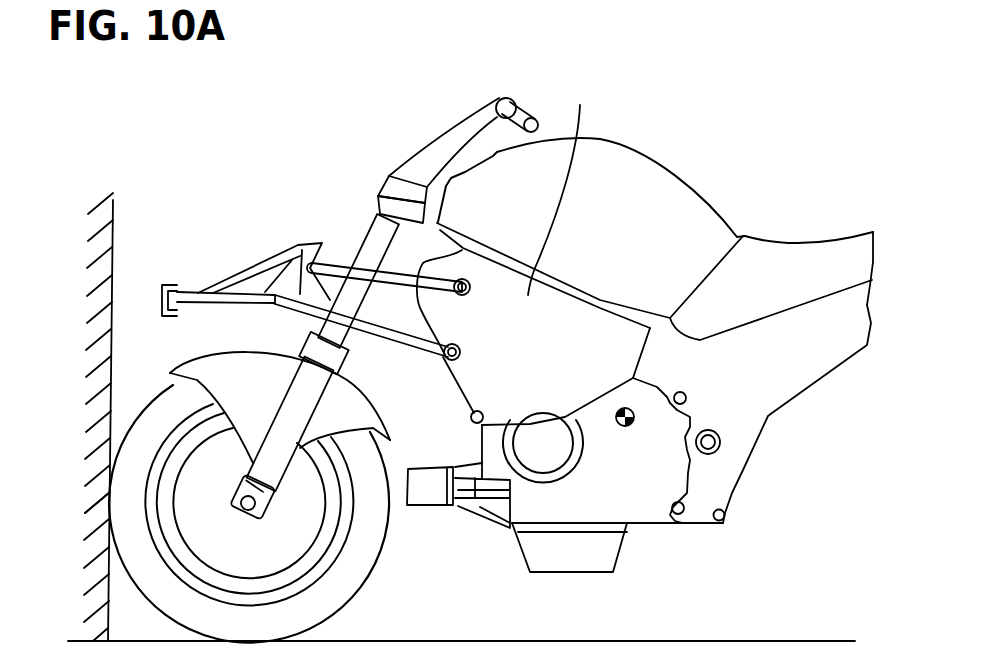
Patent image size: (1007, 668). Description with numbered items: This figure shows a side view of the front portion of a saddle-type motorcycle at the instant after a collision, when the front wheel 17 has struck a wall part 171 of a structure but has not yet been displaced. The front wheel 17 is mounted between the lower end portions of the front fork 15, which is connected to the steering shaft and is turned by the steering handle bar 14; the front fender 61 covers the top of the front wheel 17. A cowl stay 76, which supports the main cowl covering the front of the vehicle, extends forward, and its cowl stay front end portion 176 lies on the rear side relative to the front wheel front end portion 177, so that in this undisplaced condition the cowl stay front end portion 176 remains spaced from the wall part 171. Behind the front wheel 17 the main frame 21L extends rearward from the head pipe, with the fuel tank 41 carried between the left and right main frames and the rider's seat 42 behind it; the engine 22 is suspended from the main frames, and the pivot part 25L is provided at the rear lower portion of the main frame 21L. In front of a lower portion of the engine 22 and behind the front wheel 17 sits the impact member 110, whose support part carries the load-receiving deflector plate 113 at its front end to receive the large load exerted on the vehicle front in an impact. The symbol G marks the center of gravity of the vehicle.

The wall part 171 is at (113, 217).
The front wheel front end portion 177 is at (108, 511).
The front wheel 17 is at (343, 586).
The front fender 61 is at (187, 370).
The cowl stay 76 is at (221, 265).
The steering handle bar 14 is at (437, 145).
The front fork 15 is at (300, 372).
The cowl stay front end portion 176 is at (166, 300).
The fuel tank 41 is at (653, 149).
The main frame 21L is at (564, 185).
The rider's seat 42 is at (790, 258).
The pivot part 25L is at (731, 473).
The load-receiving deflector plate 113 is at (423, 490).
The impact member 110 is at (443, 517).
The engine 22 is at (576, 577).
The center of gravity G is at (618, 423).